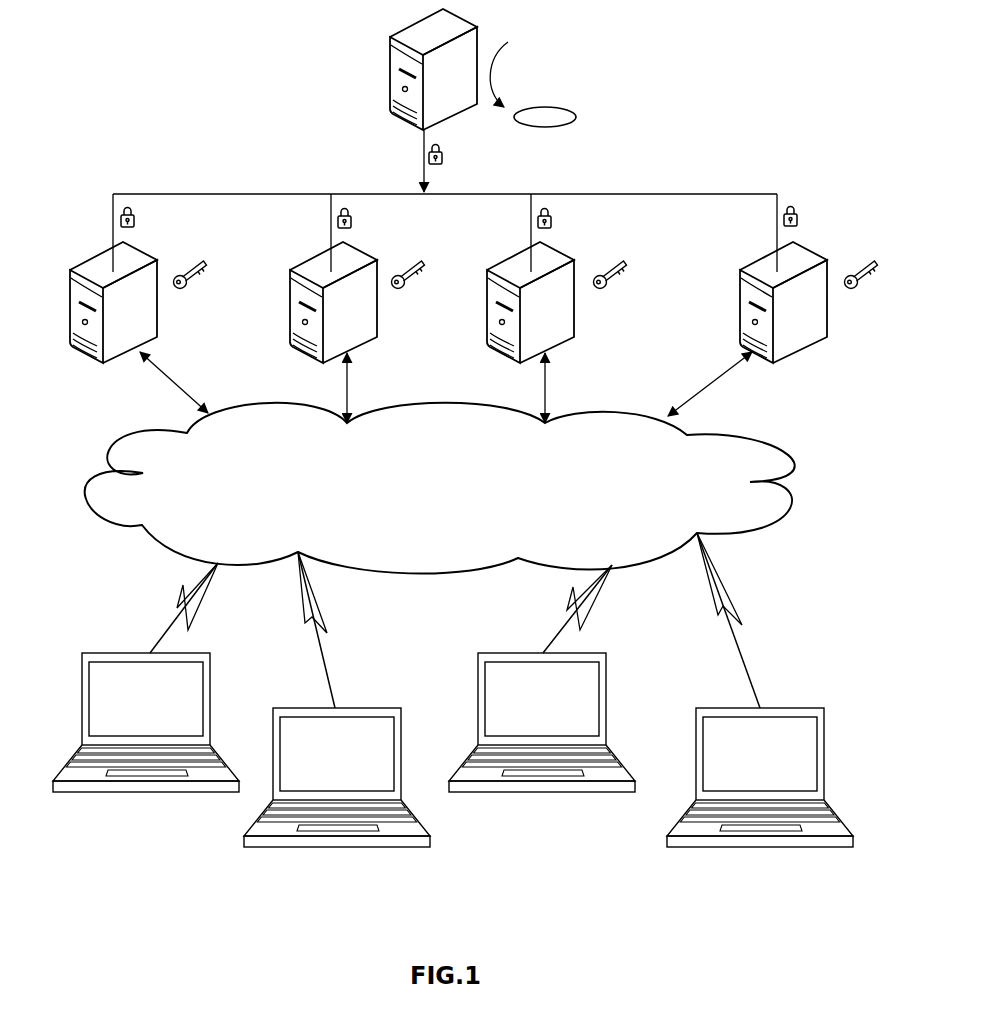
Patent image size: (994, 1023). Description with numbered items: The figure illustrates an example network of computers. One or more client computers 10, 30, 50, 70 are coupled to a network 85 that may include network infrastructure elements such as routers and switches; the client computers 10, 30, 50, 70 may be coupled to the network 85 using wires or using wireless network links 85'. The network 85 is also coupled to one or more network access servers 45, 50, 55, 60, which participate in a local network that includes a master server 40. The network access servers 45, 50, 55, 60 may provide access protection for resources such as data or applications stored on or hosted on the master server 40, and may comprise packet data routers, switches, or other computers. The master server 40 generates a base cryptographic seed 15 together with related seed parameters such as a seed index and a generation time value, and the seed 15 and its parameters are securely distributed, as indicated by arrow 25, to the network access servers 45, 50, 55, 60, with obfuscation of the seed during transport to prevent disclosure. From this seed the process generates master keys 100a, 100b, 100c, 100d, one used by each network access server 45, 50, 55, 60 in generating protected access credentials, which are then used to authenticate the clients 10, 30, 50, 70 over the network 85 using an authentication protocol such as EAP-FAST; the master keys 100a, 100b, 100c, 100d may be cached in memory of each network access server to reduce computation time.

The client computer 10 is at (159, 708).
The base cryptographic seed 15 is at (552, 107).
The arrow 25 is at (422, 158).
The client computer 30 is at (350, 763).
The master server 40 is at (461, 87).
The network access server 45 is at (141, 320).
The network access server / client computer 50 is at (361, 320).
The network access server 55 is at (558, 320).
The network access server 60 is at (811, 320).
The client computer 70 is at (773, 763).
The network 85 is at (440, 488).
The wireless network link 85' is at (463, 620).
The master key 100a is at (195, 282).
The master key 100b is at (413, 282).
The master key 100c is at (615, 282).
The master key 100d is at (866, 282).